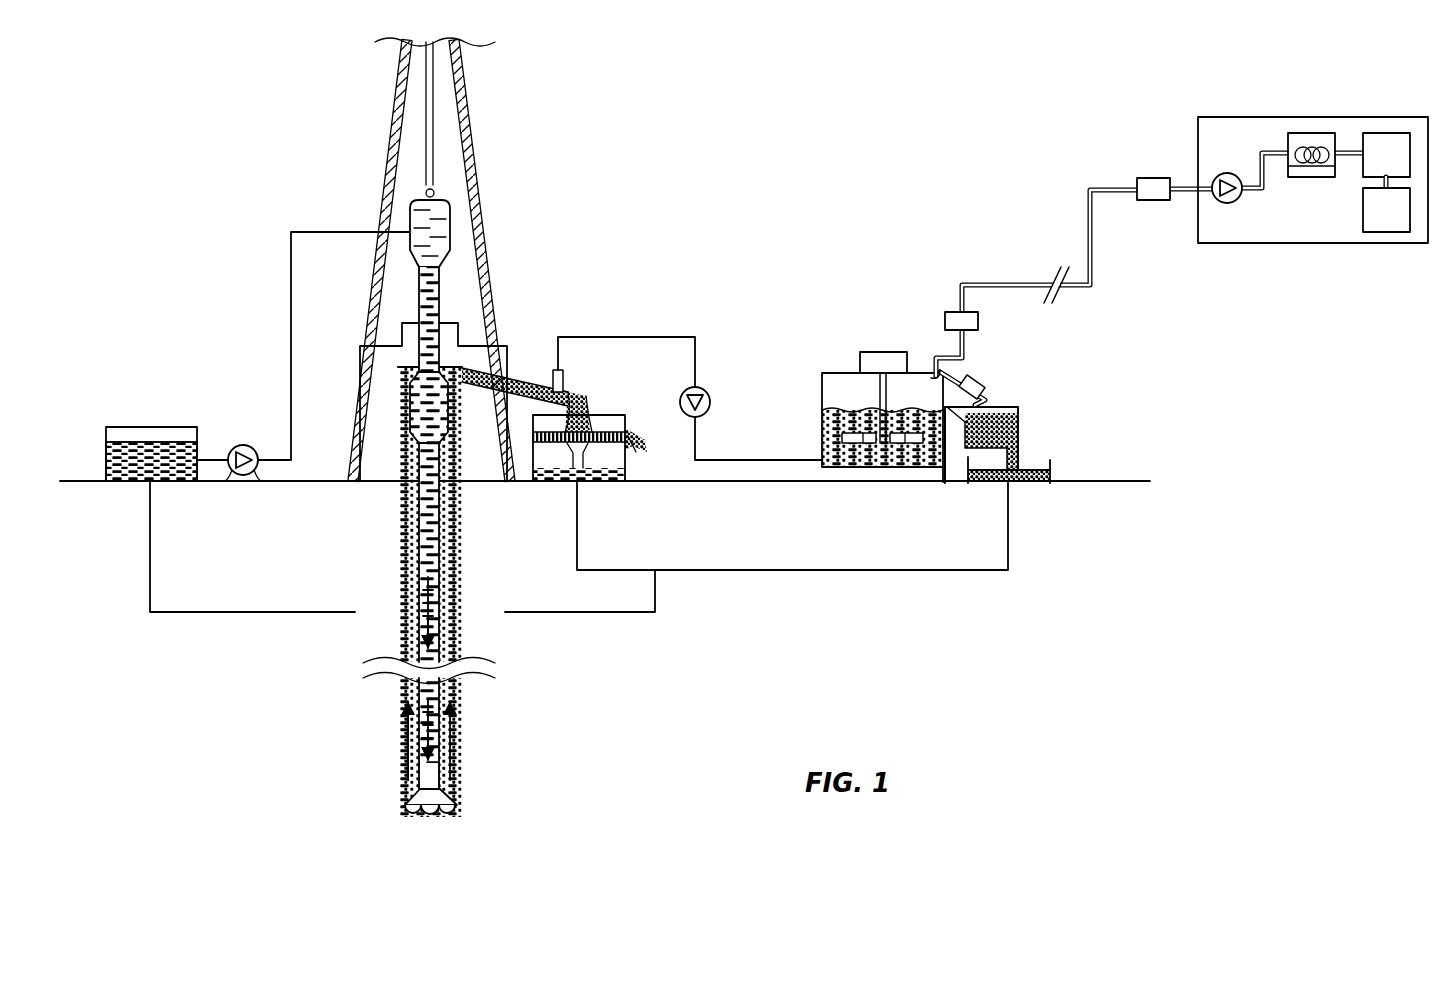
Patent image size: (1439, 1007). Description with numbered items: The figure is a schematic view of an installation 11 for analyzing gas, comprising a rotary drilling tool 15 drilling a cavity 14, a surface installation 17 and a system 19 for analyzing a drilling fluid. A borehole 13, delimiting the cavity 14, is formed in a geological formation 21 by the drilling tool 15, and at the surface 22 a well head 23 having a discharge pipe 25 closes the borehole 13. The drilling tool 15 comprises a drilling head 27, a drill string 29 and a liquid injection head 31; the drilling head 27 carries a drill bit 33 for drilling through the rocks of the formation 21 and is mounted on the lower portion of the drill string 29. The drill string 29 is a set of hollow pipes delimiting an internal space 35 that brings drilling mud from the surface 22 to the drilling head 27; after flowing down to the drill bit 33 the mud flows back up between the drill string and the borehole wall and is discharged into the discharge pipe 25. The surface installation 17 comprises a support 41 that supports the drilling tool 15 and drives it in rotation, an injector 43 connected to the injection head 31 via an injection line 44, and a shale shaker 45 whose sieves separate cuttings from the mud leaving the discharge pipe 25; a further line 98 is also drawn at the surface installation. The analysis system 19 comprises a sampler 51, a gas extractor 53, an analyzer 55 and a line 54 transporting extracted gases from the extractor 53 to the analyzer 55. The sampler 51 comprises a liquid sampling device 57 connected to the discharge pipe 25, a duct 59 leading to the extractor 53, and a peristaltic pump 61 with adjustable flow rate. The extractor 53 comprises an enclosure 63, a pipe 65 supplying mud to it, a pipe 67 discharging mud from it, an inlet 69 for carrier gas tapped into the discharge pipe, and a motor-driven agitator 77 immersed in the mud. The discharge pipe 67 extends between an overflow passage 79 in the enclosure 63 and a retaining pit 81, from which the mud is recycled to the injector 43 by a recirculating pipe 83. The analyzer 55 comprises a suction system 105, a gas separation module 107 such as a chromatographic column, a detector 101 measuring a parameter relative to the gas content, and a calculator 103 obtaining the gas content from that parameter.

The installation 11 is at (571, 178).
The borehole 13 is at (400, 745).
The cavity 14 is at (394, 791).
The rotary drilling tool 15 is at (400, 568).
The surface installation 17 is at (609, 247).
The system for analyzing a drilling fluid 19 is at (885, 299).
The geological formation 21 is at (607, 718).
The surface 22 is at (82, 481).
The well head 23 is at (472, 370).
The discharge pipe 25 is at (498, 392).
The drilling head 27 is at (446, 820).
The drill string 29 is at (441, 597).
The liquid injection head 31 is at (450, 232).
The drill bit 33 is at (412, 820).
The internal space 35 is at (453, 690).
The support 41 is at (389, 329).
The injector 43 is at (165, 427).
The injection line 44 is at (291, 256).
The shale shaker 45 is at (598, 403).
The sampler 51 is at (638, 333).
The gas extractor 53 is at (817, 359).
The line 54 is at (982, 280).
The analyzer 55 is at (1321, 99).
The liquid sampling device 57 is at (565, 382).
The duct 59 is at (679, 336).
The peristaltic pump 61 is at (703, 388).
The enclosure 63 is at (815, 391).
The pipe for supplying mud 65 is at (795, 483).
The pipe for discharging the mud 67 is at (1031, 407).
The inlet for introducing a carrier gas 69 is at (978, 386).
The agitator 77 is at (895, 446).
The overflow passage 79 is at (999, 429).
The retaining pit 81 is at (1050, 466).
The pipe for recirculating mud 83 is at (890, 572).
The water line 98 is at (245, 614).
The detector 101 is at (1393, 132).
The calculator 103 is at (1388, 234).
The suction system 105 is at (1225, 172).
The gas separation module 107 is at (1297, 132).